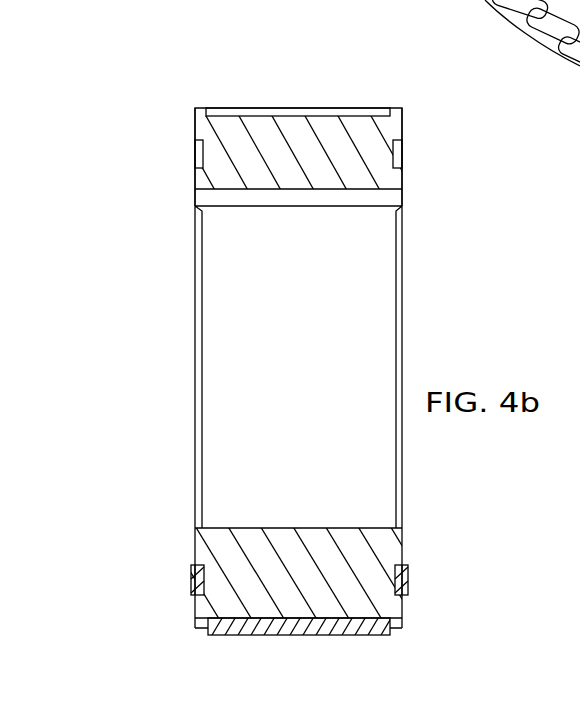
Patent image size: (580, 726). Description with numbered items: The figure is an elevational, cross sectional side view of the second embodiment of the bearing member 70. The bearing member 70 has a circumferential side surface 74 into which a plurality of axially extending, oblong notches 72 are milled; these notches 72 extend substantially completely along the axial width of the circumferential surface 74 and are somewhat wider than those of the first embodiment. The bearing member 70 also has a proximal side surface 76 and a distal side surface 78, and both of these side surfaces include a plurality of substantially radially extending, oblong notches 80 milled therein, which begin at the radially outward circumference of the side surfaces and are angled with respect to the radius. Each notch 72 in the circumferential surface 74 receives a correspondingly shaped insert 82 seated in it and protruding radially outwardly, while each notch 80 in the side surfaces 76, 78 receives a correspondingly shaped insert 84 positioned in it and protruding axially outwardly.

The bearing member 70 is at (298, 317).
The oblong notches 72 is at (322, 367).
The circumferential side surface 74 is at (272, 108).
The proximal side surface 76 is at (357, 181).
The distal side surface 78 is at (222, 129).
The oblong notches 80 is at (304, 349).
The shaped insert 82 is at (289, 599).
The insert 84 is at (304, 561).